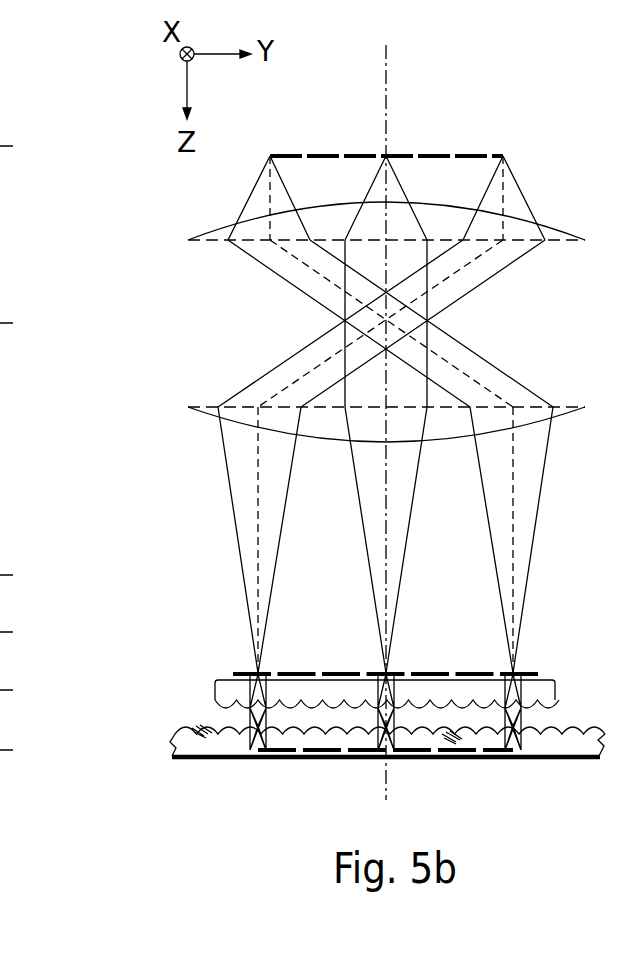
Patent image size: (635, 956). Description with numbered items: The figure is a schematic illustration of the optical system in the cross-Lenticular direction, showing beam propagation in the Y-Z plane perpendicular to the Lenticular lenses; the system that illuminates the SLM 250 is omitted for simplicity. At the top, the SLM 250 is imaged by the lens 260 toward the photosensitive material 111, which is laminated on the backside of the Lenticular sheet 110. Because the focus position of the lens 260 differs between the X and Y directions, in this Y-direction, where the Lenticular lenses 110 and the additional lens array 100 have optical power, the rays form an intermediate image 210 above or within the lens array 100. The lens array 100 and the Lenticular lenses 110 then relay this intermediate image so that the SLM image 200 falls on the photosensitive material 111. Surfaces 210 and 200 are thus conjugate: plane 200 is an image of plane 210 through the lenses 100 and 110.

The lens array 100 is at (230, 695).
The Lenticular sheet 110 is at (203, 732).
The photosensitive material 111 is at (170, 738).
The SLM image 200 is at (273, 750).
The intermediate image 210 is at (242, 672).
The SLM 250 is at (268, 157).
The lens 260 is at (166, 323).